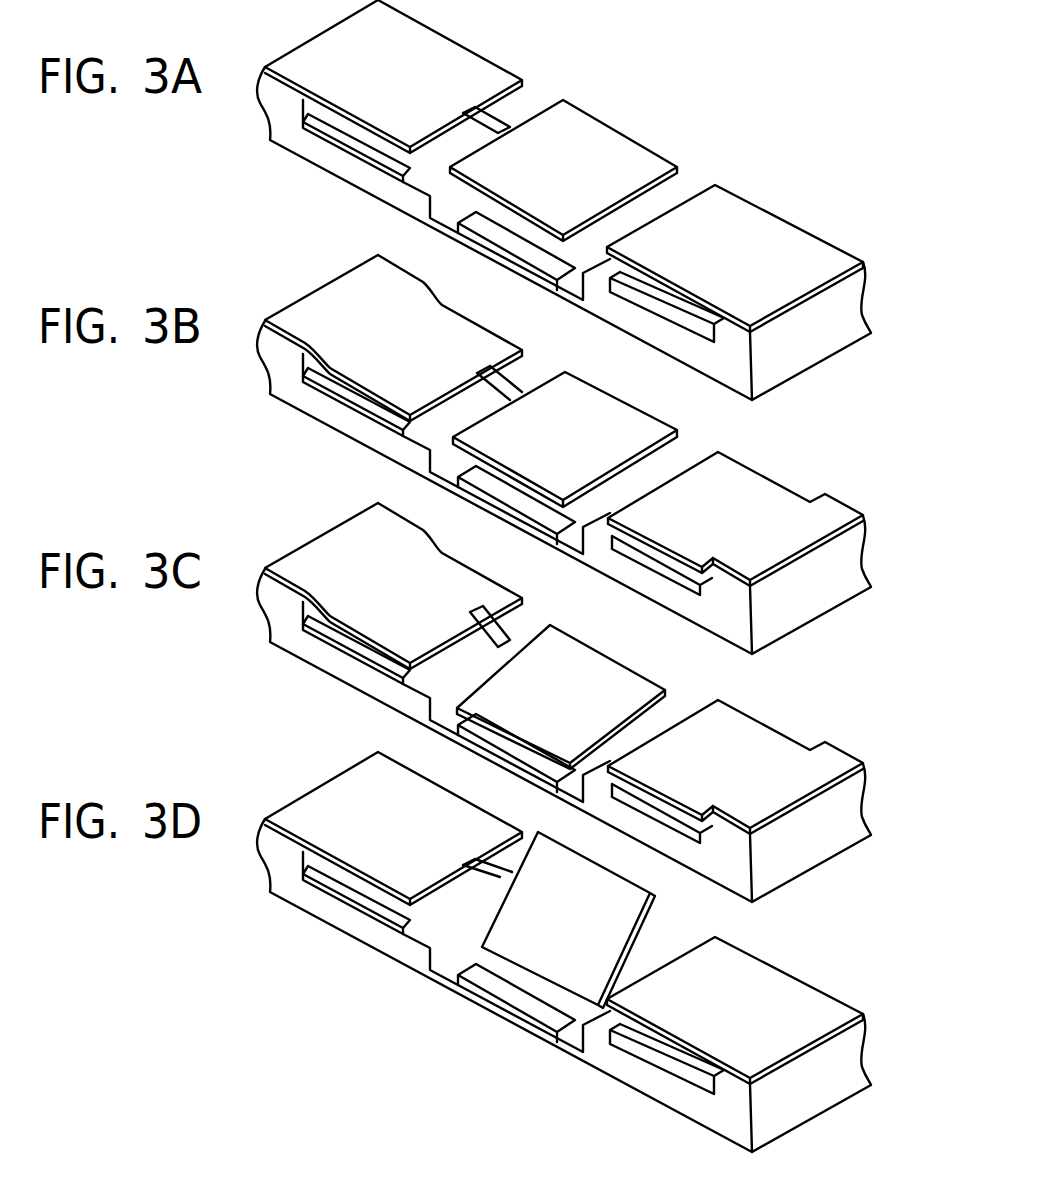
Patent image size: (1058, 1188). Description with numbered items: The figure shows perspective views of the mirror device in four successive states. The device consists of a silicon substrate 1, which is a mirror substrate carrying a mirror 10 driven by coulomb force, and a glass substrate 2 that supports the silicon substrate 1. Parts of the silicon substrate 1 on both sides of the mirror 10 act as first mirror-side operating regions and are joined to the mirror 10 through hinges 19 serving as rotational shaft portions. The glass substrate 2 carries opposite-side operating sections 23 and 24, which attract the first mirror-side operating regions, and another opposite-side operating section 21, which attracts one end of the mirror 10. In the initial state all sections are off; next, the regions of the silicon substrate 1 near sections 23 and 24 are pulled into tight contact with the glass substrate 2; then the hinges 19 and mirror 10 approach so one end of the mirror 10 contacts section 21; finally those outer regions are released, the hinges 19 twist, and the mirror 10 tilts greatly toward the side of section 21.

In FIG. 3A, the silicon substrate 1 is at (818, 258).
In FIG. 3B, the silicon substrate 1 is at (735, 553).
In FIG. 3C, the silicon substrate 1 is at (735, 801).
In FIG. 3D, the silicon substrate 1 is at (735, 1044).
In FIG. 3A, the glass substrate 2 is at (855, 308).
In FIG. 3B, the glass substrate 2 is at (855, 308).
In FIG. 3C, the glass substrate 2 is at (591, 735).
In FIG. 3D, the glass substrate 2 is at (591, 985).
In FIG. 3A, the mirror 10 is at (610, 146).
In FIG. 3B, the mirror 10 is at (565, 439).
In FIG. 3C, the mirror 10 is at (561, 697).
In FIG. 3D, the mirror 10 is at (579, 920).
In FIG. 3A, the hinges 19 is at (490, 122).
In FIG. 3B, the hinges 19 is at (527, 370).
In FIG. 3C, the hinges 19 is at (524, 617).
In FIG. 3D, the hinges 19 is at (428, 918).
In FIG. 3A, the opposite-side operating section 21 is at (503, 253).
In FIG. 3B, the opposite-side operating section 21 is at (516, 508).
In FIG. 3C, the opposite-side operating section 21 is at (516, 756).
In FIG. 3D, the opposite-side operating section 21 is at (516, 1006).
In FIG. 3A, the opposite-side operating section 23 is at (347, 144).
In FIG. 3B, the opposite-side operating section 23 is at (393, 363).
In FIG. 3C, the opposite-side operating section 23 is at (393, 611).
In FIG. 3D, the opposite-side operating section 23 is at (393, 860).
In FIG. 3A, the opposite-side operating section 24 is at (657, 308).
In FIG. 3B, the opposite-side operating section 24 is at (655, 581).
In FIG. 3C, the opposite-side operating section 24 is at (655, 829).
In FIG. 3D, the opposite-side operating section 24 is at (661, 1074).